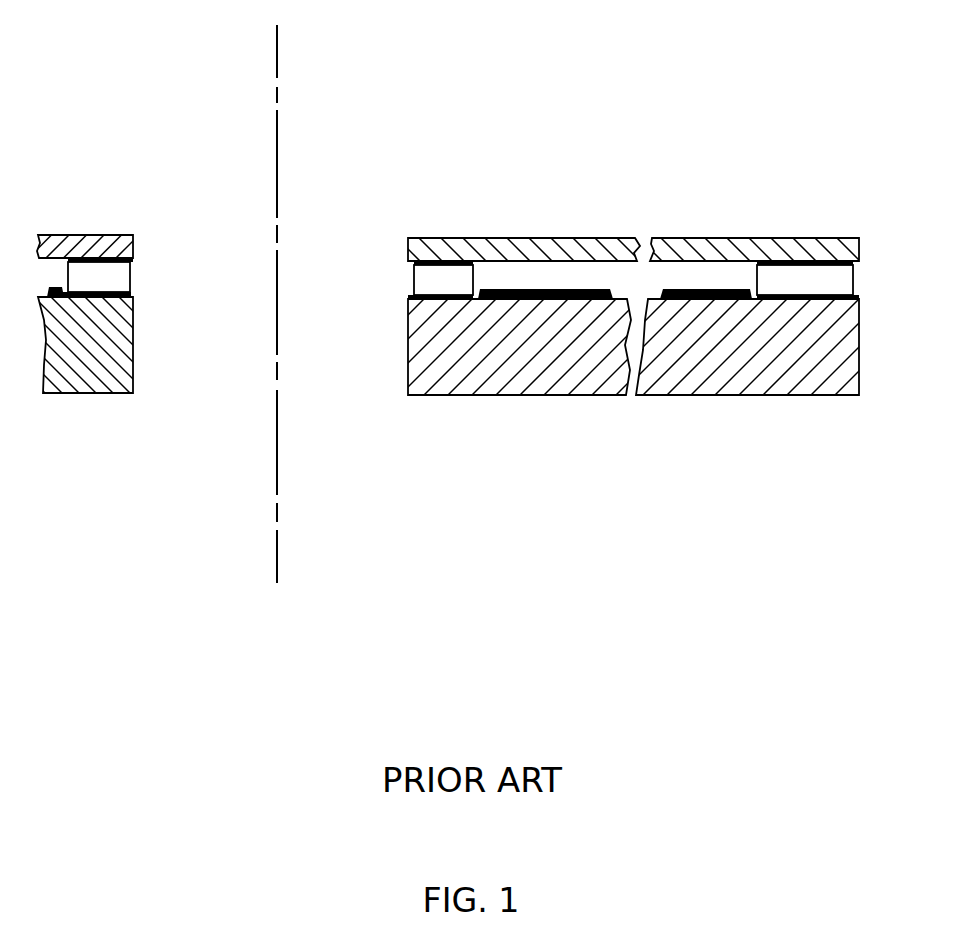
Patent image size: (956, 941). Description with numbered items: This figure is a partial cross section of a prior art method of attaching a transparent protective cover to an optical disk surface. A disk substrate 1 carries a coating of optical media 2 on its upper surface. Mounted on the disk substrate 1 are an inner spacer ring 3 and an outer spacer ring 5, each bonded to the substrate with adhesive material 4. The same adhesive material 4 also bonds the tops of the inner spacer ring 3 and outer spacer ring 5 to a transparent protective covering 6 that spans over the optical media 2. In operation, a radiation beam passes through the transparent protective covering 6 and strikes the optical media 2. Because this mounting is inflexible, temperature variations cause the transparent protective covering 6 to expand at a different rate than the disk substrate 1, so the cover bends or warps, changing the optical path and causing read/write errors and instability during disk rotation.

The disk substrate 1 is at (117, 358).
The optical media 2 is at (517, 289).
The inner spacer ring 3 is at (89, 278).
The adhesive material 4 is at (104, 291).
The outer spacer ring 5 is at (802, 278).
The transparent protective covering 6 is at (110, 243).